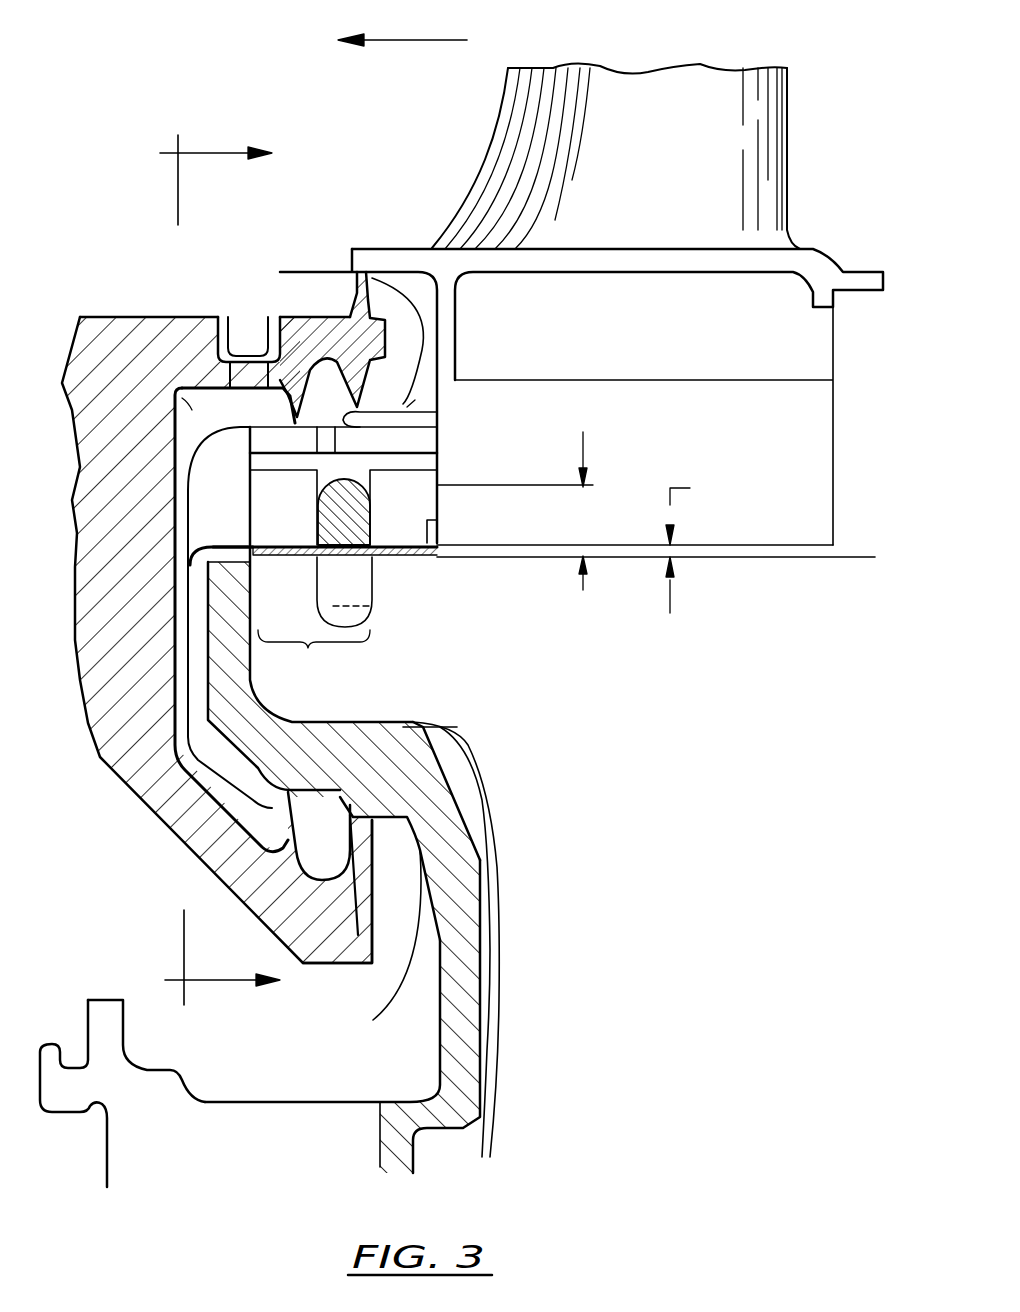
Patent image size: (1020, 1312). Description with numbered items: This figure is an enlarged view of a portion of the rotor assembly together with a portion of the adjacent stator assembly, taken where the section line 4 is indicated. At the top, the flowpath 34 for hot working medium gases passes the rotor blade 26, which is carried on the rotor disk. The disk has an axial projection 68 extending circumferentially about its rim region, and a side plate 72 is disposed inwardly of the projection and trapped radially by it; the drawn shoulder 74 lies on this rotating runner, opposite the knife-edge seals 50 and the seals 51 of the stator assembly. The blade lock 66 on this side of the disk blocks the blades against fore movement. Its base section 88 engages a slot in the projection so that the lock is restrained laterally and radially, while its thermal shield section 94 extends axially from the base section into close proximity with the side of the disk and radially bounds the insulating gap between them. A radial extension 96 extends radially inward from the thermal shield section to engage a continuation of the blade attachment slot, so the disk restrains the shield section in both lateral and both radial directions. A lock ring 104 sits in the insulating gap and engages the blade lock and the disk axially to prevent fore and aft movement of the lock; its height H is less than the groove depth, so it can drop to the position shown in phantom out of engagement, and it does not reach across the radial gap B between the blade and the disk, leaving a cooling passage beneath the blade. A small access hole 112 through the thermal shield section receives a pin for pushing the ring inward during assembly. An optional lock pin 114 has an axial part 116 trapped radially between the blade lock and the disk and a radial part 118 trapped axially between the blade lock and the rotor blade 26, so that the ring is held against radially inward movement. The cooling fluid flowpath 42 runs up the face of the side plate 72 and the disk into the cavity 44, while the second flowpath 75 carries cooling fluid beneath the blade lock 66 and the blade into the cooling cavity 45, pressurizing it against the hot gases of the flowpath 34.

The rotor blade 26 is at (812, 265).
The flowpath 34 is at (400, 37).
The cooling fluid flowpath 42 is at (340, 275).
The cavity 44 is at (178, 385).
The cooling cavity 45 is at (418, 288).
The seals 50 is at (337, 891).
The seals 51 is at (355, 405).
The blade lock 66 is at (405, 409).
The axial projection 68 is at (314, 654).
The side plate 72 is at (467, 948).
The runner shoulder 74 is at (457, 748).
The second flowpath 75 is at (228, 546).
The base section 88 is at (300, 519).
The thermal shield section 94 is at (422, 418).
The radial extension 96 is at (420, 497).
The lock ring 104 is at (378, 572).
The access hole 112 is at (325, 438).
The lock pin 114 is at (412, 552).
The axial part 116 is at (258, 552).
The radial part 118 is at (432, 526).
The section line 4- 4 is at (232, 570).
The height H is at (582, 511).
The radial gap B is at (687, 544).